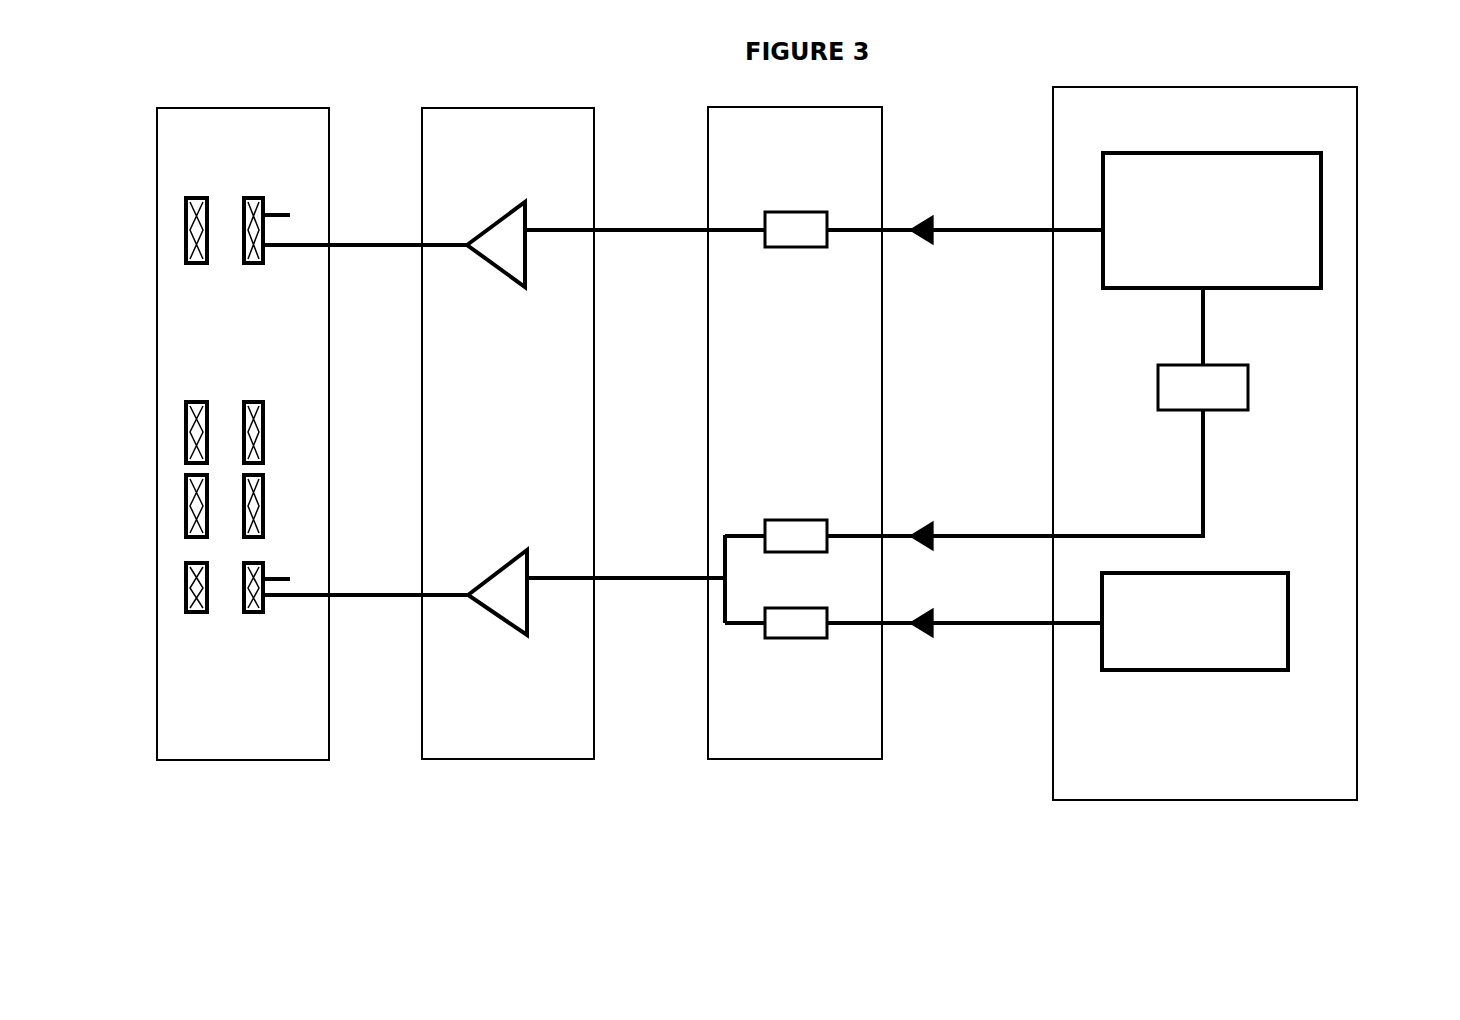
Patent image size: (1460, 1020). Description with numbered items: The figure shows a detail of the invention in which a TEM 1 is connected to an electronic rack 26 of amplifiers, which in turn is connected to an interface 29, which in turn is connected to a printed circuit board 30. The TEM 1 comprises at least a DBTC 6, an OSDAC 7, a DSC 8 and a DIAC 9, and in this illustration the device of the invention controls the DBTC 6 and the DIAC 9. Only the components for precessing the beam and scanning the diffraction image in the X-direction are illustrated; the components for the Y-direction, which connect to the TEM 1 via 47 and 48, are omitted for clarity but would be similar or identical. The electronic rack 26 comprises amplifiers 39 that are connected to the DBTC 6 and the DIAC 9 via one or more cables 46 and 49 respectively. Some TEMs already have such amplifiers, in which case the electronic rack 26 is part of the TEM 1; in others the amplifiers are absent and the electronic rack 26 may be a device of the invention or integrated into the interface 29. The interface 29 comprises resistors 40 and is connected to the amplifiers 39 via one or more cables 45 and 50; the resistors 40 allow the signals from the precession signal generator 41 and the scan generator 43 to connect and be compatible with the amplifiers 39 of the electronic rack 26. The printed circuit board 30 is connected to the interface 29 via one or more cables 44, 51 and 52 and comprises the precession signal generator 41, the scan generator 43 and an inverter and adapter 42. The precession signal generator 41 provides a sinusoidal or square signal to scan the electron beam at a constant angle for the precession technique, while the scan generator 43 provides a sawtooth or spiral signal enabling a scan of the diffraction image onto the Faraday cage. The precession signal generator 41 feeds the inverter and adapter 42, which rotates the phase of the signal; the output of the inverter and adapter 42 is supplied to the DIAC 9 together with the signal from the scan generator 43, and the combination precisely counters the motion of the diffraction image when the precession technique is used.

The TEM 1 is at (229, 773).
The DBTC 6 is at (243, 275).
The OSDAC 7 is at (246, 390).
The DSC 8 is at (235, 495).
The DIAC 9 is at (244, 625).
The electronic rack 26 is at (479, 772).
The interface 29 is at (784, 772).
The printed circuit board 30 is at (1267, 813).
The amplifiers 39 is at (490, 215).
The resistors 40 is at (797, 260).
The precession signal generator 41 is at (1340, 232).
The inverter and adapter 42 is at (1265, 387).
The scan generator 43 is at (1224, 683).
The cable 44 is at (951, 213).
The cable 45 is at (626, 218).
The cable 46 is at (360, 228).
The connection for Y-direction components 47 is at (280, 201).
The connection for Y-direction components 48 is at (278, 562).
The cable 49 is at (358, 577).
The cable 50 is at (626, 565).
The cable 51 is at (954, 520).
The cable 52 is at (962, 640).